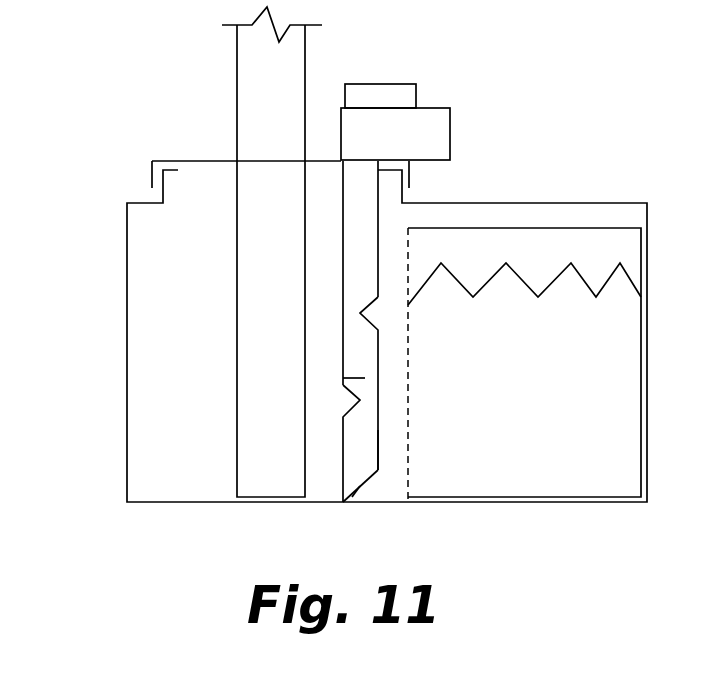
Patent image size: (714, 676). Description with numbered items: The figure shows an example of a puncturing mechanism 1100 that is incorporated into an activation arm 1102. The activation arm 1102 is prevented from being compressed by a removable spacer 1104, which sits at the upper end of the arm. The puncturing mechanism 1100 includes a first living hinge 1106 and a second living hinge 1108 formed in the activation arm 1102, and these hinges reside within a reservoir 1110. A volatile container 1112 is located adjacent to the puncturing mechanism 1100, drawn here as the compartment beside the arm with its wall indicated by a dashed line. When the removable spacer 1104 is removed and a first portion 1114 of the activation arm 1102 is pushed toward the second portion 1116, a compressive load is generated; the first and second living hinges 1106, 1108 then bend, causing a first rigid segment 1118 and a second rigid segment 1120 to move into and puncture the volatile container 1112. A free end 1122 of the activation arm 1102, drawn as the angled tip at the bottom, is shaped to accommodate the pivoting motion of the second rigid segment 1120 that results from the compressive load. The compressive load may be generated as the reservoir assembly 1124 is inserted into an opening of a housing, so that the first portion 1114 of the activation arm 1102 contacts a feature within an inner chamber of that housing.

The puncturing mechanism 1100 is at (359, 359).
The activation arm 1102 is at (368, 210).
The removable spacer 1104 is at (437, 137).
The first living hinge 1106 is at (363, 312).
The second living hinge 1108 is at (345, 415).
The reservoir 1110 is at (247, 252).
The volatile container 1112 is at (630, 248).
The first portion 1114 is at (452, 101).
The second portion 1116 is at (390, 481).
The first rigid segment 1118 is at (343, 378).
The second rigid segment 1120 is at (365, 469).
The free end 1122 is at (352, 497).
The reservoir assembly 1124 is at (86, 234).